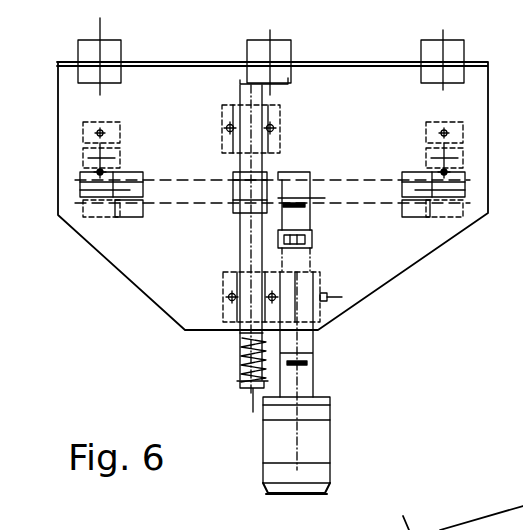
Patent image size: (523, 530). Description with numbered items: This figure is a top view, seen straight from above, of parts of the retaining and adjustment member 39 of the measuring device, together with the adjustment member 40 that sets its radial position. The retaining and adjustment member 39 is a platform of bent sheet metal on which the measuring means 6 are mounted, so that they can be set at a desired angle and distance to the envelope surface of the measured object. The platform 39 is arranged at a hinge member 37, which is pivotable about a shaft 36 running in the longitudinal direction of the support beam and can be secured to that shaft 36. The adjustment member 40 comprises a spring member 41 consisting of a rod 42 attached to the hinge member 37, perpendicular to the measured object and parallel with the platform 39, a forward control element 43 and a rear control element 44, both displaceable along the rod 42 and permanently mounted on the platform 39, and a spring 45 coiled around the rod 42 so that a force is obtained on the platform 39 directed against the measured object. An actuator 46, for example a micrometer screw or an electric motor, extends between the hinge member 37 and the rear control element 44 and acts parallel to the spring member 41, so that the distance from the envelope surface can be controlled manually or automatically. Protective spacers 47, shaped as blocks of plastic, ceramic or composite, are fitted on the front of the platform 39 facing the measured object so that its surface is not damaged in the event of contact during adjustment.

The measuring means 6 is at (251, 48).
The protective spacer 47 is at (88, 47).
The shaft 36 is at (352, 190).
The hinge member 37 is at (297, 172).
The retaining and adjustment member 39 is at (121, 247).
The adjustment member 40 is at (392, 345).
The spring member 41 is at (192, 378).
The rod 42 is at (244, 236).
The forward control element 43 is at (288, 104).
The rear control element 44 is at (224, 278).
The spring 45 is at (238, 379).
The actuator 46 is at (313, 440).